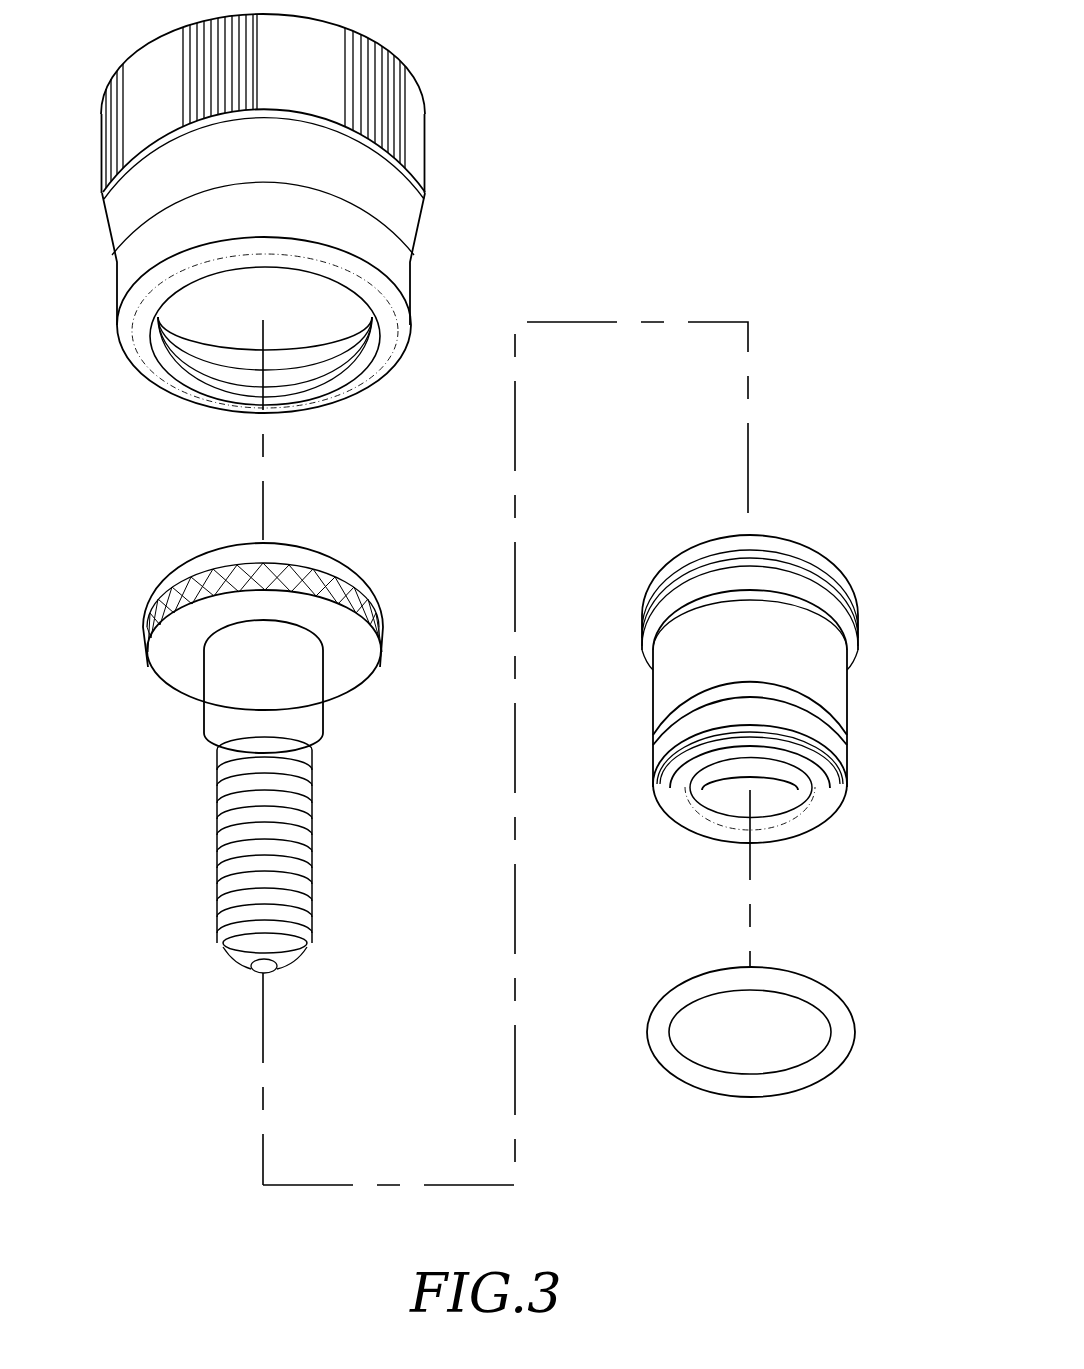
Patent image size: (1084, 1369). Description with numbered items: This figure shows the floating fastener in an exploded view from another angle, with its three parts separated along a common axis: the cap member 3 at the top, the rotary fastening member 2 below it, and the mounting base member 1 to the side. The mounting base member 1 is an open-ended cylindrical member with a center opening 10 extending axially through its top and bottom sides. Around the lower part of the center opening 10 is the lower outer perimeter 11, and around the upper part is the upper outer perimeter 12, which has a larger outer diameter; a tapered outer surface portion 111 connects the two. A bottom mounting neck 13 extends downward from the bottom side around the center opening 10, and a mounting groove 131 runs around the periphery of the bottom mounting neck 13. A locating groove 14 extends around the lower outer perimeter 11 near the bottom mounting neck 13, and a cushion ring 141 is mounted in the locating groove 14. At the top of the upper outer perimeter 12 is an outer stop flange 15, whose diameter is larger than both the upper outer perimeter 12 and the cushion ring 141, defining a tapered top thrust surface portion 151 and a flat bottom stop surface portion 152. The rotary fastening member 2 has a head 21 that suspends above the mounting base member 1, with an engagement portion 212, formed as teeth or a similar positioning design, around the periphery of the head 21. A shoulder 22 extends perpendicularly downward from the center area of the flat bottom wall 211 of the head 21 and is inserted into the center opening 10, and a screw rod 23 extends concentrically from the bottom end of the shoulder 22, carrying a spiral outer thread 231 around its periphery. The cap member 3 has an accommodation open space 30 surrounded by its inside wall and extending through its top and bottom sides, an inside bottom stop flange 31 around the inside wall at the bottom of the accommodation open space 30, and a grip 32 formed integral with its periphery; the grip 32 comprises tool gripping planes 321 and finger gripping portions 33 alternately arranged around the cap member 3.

The mounting base member 1 is at (820, 524).
The center opening 10 is at (781, 810).
The lower outer perimeter 11 is at (836, 673).
The tapered outer surface portion 111 is at (838, 634).
The upper outer perimeter 12 is at (822, 597).
The bottom mounting neck 13 is at (820, 803).
The mounting groove 131 is at (790, 746).
The locating groove 14 is at (666, 713).
The cushion ring 141 is at (695, 985).
The outer stop flange 15 is at (596, 532).
The tapered top thrust surface portion 151 is at (702, 553).
The flat bottom stop surface portion 152 is at (676, 581).
The rotary fastening member 2 is at (157, 546).
The head 21 is at (302, 557).
The flat bottom wall 211 is at (352, 637).
The engagement portion 212 is at (350, 583).
The shoulder 22 is at (308, 685).
The screw rod 23 is at (335, 866).
The spiral outer thread 231 is at (295, 834).
The cap member 3 is at (455, 196).
The accommodation open space 30 is at (320, 338).
The inside bottom stop flange 31 is at (201, 365).
The grip 32 is at (540, 135).
The tool gripping planes 321 is at (410, 131).
The finger gripping portions 33 is at (388, 67).